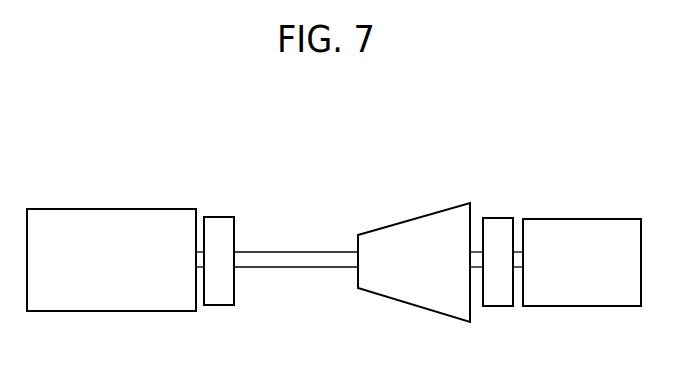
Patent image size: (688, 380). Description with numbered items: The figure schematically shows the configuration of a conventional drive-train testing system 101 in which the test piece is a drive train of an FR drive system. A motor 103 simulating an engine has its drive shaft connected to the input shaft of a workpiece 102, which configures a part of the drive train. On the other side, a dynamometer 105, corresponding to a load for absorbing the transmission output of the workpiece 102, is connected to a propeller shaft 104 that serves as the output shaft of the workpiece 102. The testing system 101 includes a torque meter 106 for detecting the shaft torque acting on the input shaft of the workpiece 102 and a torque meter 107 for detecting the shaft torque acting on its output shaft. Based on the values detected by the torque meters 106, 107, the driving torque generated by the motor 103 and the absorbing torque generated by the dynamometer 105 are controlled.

The drive-train testing system 101 is at (90, 116).
The workpiece 102 is at (422, 215).
The motor 103 is at (597, 218).
The propeller shaft 104 is at (298, 252).
The dynamometer 105 is at (135, 209).
The torque meter 106 is at (502, 307).
The torque meter 107 is at (225, 306).